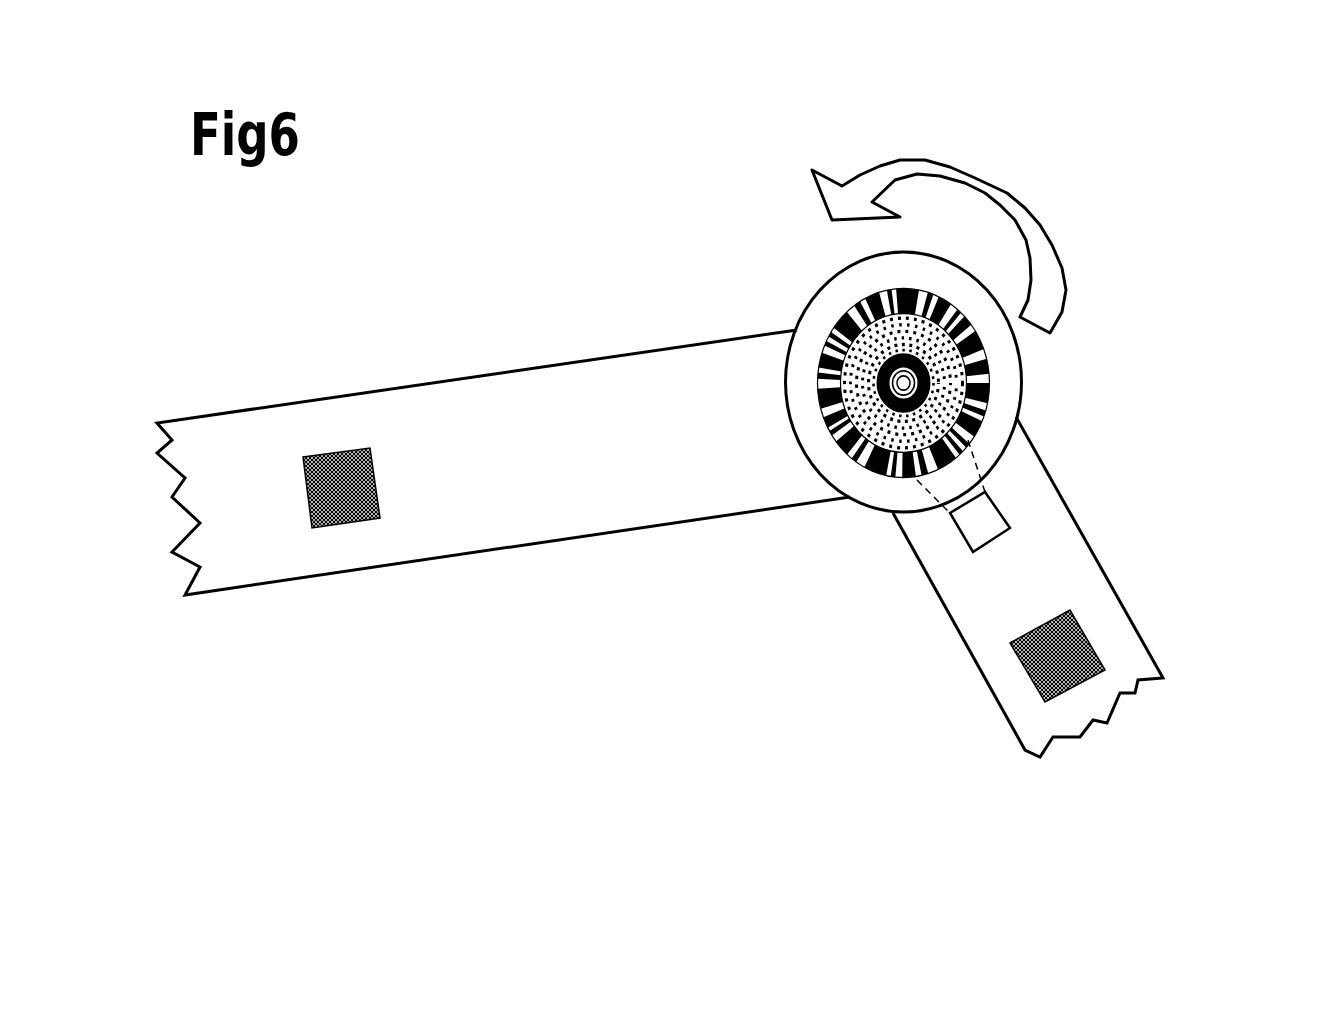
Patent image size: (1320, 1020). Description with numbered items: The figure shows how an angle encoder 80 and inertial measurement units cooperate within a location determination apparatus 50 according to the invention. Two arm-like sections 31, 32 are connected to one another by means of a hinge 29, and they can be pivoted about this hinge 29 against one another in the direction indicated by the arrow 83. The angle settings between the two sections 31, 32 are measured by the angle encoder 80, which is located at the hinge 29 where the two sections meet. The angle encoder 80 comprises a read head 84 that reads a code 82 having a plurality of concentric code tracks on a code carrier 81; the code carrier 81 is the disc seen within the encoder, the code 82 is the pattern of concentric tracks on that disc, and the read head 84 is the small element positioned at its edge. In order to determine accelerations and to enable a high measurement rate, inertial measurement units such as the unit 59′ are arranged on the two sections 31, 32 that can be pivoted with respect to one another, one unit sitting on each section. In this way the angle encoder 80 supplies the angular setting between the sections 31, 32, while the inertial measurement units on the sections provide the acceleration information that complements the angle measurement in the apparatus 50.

The location determination apparatus 50 is at (1012, 121).
The hinge 29 is at (865, 508).
The first arm-like section 31 is at (435, 420).
The second arm-like section 32 is at (1137, 645).
The inertial measurement unit 59′ is at (343, 483).
The angle encoder 80 is at (1027, 390).
The code carrier 81 is at (1010, 348).
The code disc 82 is at (860, 330).
The arrow 83 is at (1053, 235).
The read head 84 is at (983, 522).